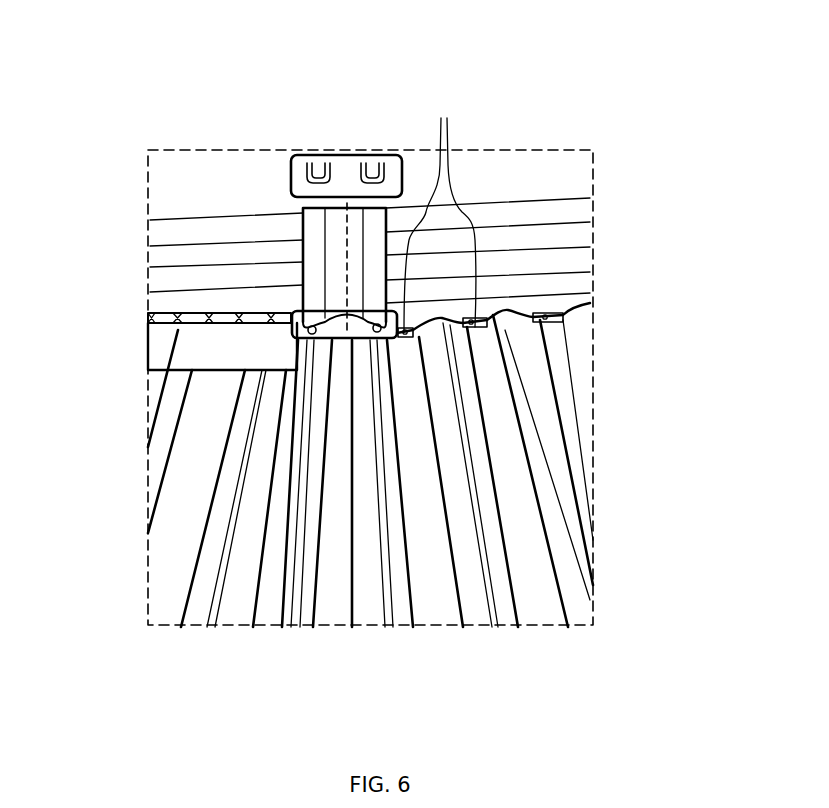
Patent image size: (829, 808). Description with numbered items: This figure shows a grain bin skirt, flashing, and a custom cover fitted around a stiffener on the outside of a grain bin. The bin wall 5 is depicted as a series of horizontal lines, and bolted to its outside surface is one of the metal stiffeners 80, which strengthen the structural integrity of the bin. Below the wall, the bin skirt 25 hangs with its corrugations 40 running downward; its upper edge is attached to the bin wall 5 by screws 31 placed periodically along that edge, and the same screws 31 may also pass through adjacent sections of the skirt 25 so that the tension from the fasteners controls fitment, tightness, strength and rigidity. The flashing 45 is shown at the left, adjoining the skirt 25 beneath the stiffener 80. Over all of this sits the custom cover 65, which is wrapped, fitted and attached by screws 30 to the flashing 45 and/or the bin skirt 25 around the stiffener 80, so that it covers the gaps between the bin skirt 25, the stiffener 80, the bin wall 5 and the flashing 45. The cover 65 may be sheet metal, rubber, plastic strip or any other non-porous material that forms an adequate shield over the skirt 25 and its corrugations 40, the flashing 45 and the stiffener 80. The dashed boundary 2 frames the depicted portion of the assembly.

The roof system 2 is at (190, 627).
The bin wall 5 is at (510, 250).
The bin skirt 25 is at (440, 567).
The screws 30 is at (290, 321).
The screws 31 is at (672, 281).
The corrugations 40 is at (440, 408).
The flashing 45 is at (283, 343).
The custom cover 65 is at (347, 190).
The metal stiffeners 80 is at (340, 223).